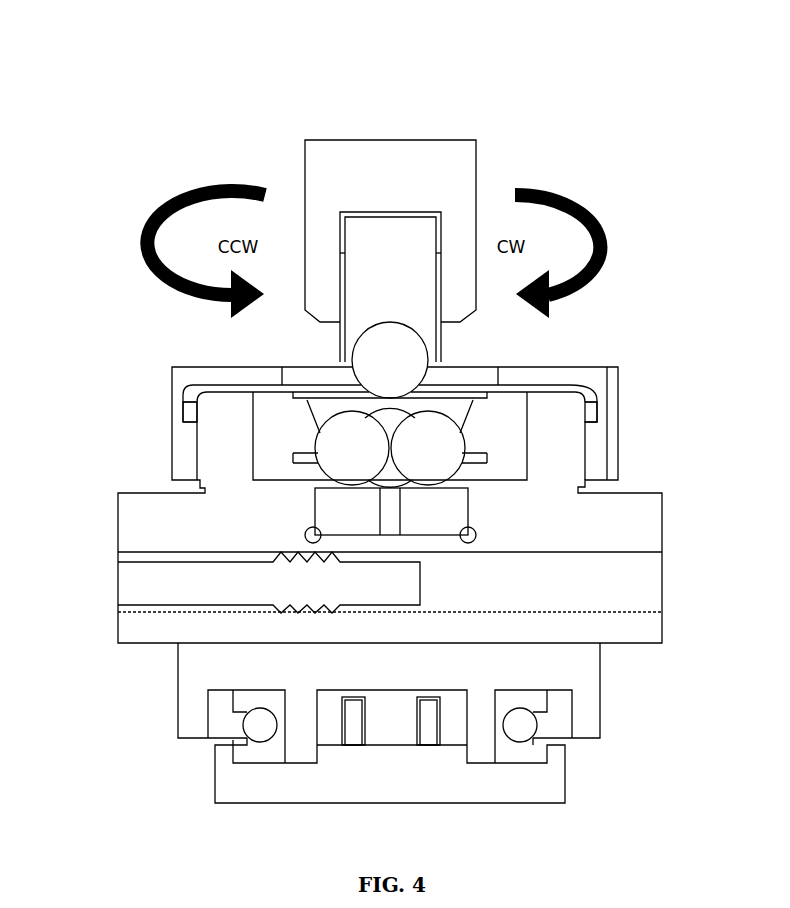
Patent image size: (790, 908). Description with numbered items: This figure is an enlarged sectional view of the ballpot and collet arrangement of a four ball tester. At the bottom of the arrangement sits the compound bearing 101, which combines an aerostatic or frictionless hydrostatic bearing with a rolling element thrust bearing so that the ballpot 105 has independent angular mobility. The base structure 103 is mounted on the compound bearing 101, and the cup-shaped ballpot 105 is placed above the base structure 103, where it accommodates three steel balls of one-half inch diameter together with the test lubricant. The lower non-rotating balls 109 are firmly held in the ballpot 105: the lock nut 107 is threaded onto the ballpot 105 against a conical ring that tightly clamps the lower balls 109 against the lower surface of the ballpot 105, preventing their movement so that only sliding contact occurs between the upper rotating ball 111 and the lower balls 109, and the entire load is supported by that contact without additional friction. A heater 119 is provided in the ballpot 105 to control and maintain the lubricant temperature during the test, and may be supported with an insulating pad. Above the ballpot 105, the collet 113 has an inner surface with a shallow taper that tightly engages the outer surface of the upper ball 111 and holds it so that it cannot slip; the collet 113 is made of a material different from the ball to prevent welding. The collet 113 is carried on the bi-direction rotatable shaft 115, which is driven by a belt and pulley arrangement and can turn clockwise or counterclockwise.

The compound bearing 101 is at (560, 695).
The base structure 103 is at (230, 663).
The ballpot 105 is at (665, 373).
The lock nut 107 is at (187, 402).
The non-rotating balls 109 is at (418, 465).
The rotating ball 111 is at (400, 355).
The collet 113 is at (407, 263).
The rotatable shaft 115 is at (326, 163).
The heater 119 is at (213, 578).